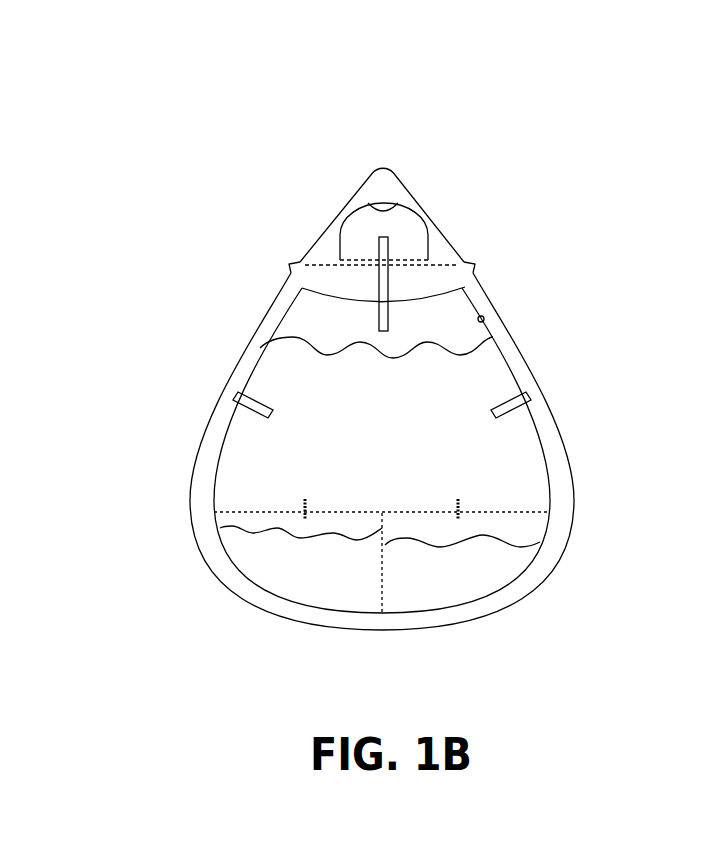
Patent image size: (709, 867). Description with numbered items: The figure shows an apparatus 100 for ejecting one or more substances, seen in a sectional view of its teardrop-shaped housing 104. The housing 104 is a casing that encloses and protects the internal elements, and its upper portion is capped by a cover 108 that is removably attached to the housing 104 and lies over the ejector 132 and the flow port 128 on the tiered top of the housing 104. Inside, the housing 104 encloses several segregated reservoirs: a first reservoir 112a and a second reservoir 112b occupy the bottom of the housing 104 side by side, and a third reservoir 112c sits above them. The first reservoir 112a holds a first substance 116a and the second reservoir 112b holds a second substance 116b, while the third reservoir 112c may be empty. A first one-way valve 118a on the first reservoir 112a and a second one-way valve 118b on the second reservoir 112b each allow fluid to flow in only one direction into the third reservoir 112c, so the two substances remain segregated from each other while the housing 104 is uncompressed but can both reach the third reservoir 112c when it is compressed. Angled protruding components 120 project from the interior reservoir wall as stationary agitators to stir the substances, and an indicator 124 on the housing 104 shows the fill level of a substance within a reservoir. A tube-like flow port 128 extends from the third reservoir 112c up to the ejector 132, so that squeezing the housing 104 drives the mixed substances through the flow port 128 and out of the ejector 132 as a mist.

The apparatus 100 is at (571, 90).
The housing 104 is at (552, 445).
The cover 108 is at (392, 185).
The first reservoir 112a is at (330, 595).
The second reservoir 112b is at (438, 583).
The third reservoir 112c is at (278, 320).
The first substance 116a is at (263, 570).
The second substance 116b is at (500, 568).
The first one-way valve 118a is at (300, 494).
The second one-way valve 118b is at (461, 494).
The protruding component 120 is at (240, 393).
The indicator 124 is at (484, 319).
The flow port 128 is at (388, 276).
The ejector 132 is at (387, 222).